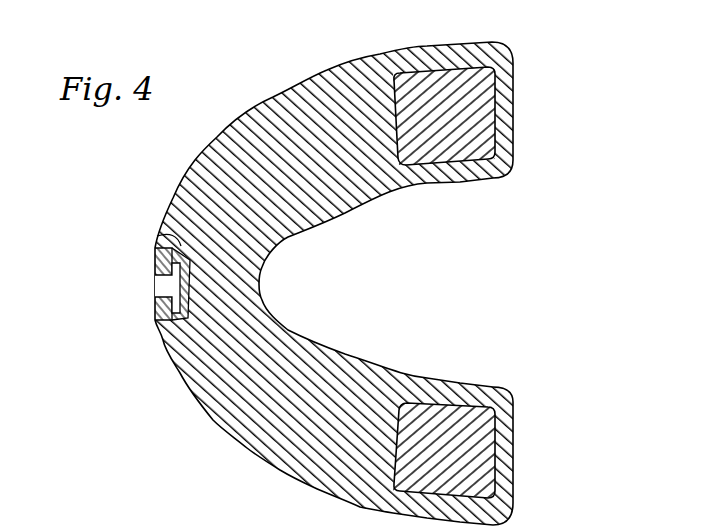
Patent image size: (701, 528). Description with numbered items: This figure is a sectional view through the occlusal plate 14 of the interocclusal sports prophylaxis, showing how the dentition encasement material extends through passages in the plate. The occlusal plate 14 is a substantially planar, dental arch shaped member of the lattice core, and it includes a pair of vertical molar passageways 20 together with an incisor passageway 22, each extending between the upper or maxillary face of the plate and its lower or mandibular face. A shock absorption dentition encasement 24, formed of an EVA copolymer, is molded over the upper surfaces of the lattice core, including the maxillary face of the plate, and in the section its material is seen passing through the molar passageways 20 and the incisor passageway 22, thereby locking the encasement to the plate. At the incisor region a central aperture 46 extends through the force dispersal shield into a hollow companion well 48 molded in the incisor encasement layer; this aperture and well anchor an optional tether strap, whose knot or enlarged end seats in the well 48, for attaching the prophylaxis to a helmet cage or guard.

The occlusal plate 14 is at (330, 362).
The vertical molar passageways 20 is at (513, 118).
The incisor passageway 22 is at (167, 221).
The shock absorption dentition encasement 24 is at (285, 285).
The central aperture 46 is at (154, 280).
The hollow companion well 48 is at (157, 312).